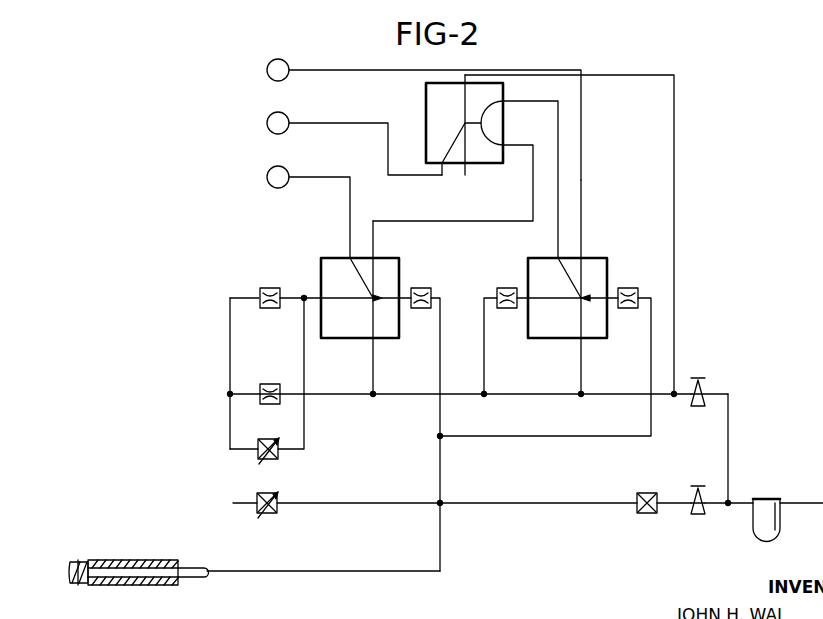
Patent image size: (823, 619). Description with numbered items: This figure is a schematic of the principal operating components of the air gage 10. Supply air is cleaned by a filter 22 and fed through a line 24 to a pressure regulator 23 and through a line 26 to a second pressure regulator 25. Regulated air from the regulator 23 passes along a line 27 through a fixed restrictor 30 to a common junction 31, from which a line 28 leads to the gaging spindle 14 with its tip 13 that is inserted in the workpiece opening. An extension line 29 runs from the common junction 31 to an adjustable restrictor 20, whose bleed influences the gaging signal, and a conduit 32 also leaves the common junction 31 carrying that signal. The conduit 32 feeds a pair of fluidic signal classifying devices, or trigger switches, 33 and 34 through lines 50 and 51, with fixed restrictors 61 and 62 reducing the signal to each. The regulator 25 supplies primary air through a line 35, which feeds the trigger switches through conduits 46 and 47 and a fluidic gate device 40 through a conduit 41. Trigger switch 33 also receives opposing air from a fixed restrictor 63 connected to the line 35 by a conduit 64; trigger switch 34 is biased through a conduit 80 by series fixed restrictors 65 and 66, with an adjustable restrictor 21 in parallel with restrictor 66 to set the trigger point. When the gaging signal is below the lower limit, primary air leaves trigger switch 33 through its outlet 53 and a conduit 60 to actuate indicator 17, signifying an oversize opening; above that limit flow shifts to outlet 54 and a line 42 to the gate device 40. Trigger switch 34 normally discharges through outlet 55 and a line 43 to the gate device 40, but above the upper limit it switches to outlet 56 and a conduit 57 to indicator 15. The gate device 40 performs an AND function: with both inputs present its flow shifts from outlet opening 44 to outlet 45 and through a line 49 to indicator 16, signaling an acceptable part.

The gage 10 is at (128, 178).
The probe tip 13 is at (198, 578).
The gaging spindle 14 is at (118, 533).
The visual indicator 15 is at (267, 177).
The visual indicator 16 is at (267, 123).
The visual indicator 17 is at (267, 70).
The adjustable restrictor 20 is at (253, 492).
The adjustable restrictor 21 is at (253, 455).
The filter 22 is at (763, 497).
The pressure regulator 23 is at (700, 517).
The line 24 is at (722, 508).
The pressure regulator 25 is at (697, 408).
The line 26 is at (732, 452).
The line 27 is at (667, 503).
The line 28 is at (353, 572).
The extension line 29 is at (327, 503).
The fixed restrictor 30 is at (650, 513).
The common junction 31 is at (441, 503).
The conduit 32 is at (438, 450).
The fluidic signal classifying device 33 is at (593, 265).
The fluidic signal classifying device 34 is at (385, 268).
The line 35 is at (680, 393).
The fluidic gate device 40 is at (482, 92).
The conduit 41 is at (676, 180).
The line 42 is at (558, 165).
The line 43 is at (535, 197).
The outlet opening 44 is at (465, 165).
The outlet 45 is at (445, 176).
The conduit 46 is at (582, 368).
The conduit 47 is at (373, 366).
The line 49 is at (333, 122).
The line 50 is at (650, 408).
The line 51 is at (458, 372).
The outlet 53 is at (582, 250).
The outlet 54 is at (558, 259).
The outlet 55 is at (377, 252).
The outlet 56 is at (350, 257).
The conduit 57 is at (315, 177).
The conduit 60 is at (334, 69).
The fixed restrictor 61 is at (628, 288).
The fixed restrictor 62 is at (411, 287).
The fixed restrictor 63 is at (508, 287).
The conduit 64 is at (487, 362).
The fixed restrictor 65 is at (268, 383).
The fixed restrictor 66 is at (260, 288).
The conduit 80 is at (310, 297).